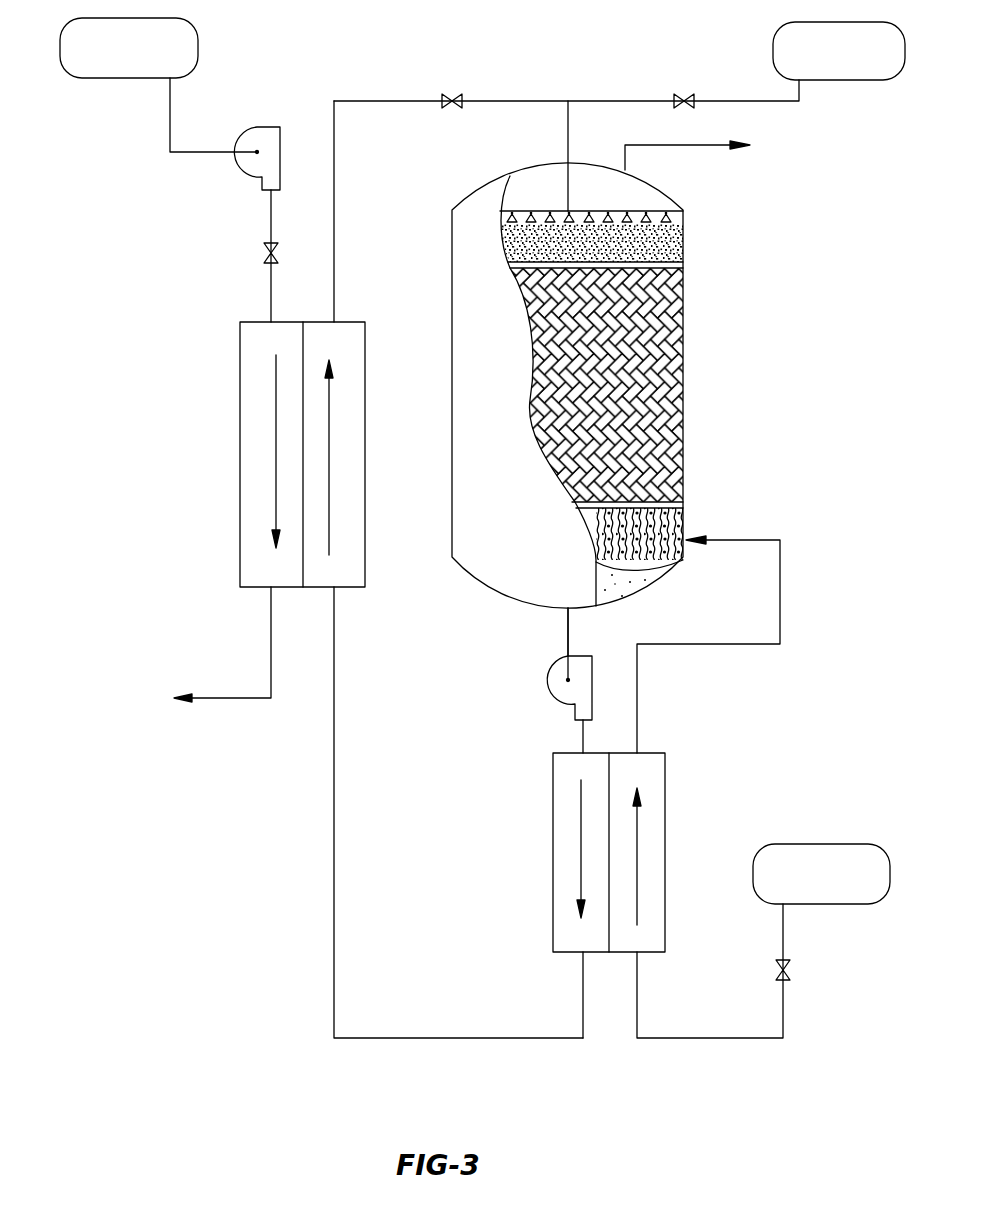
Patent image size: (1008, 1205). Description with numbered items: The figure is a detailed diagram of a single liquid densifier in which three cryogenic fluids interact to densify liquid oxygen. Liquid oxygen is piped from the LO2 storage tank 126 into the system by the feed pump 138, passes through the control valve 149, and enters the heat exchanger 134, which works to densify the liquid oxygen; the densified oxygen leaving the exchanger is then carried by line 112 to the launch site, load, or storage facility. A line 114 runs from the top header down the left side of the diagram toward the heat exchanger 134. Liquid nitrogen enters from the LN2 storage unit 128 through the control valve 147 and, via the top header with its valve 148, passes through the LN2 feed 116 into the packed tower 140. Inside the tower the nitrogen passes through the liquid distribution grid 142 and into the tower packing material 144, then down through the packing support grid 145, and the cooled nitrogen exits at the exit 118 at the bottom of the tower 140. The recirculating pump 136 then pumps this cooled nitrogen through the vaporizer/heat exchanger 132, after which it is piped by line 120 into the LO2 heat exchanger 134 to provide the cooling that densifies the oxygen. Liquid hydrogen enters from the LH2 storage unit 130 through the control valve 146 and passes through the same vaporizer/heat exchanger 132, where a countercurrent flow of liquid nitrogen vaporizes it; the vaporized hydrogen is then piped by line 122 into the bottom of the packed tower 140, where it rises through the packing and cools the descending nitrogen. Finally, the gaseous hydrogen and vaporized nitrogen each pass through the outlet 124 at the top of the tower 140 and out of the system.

The densified LO2 carry line 112 is at (178, 695).
The feed line 114 is at (334, 222).
The LN2 feed 116 is at (572, 186).
The tower exit 118 is at (565, 633).
The LN2 pipe 120 is at (334, 783).
The vaporized hydrogen pipe 122 is at (780, 620).
The outlet 124 is at (735, 152).
The LO2 storage tank 126 is at (120, 78).
The LN2 storage unit 128 is at (825, 82).
The LH2 storage unit 130 is at (815, 845).
The vaporizer/heat exchanger 132 is at (665, 843).
The heat exchanger 134 is at (240, 482).
The recirculating pump 136 is at (545, 688).
The feed pump 138 is at (265, 127).
The packed tower 140 is at (683, 342).
The liquid distribution grid 142 is at (688, 265).
The tower packing material 144 is at (657, 380).
The packing support grid 145 is at (683, 502).
The control valve 146 is at (788, 970).
The control valve 147 is at (684, 96).
The valve 148 is at (452, 96).
The control valve 149 is at (268, 258).